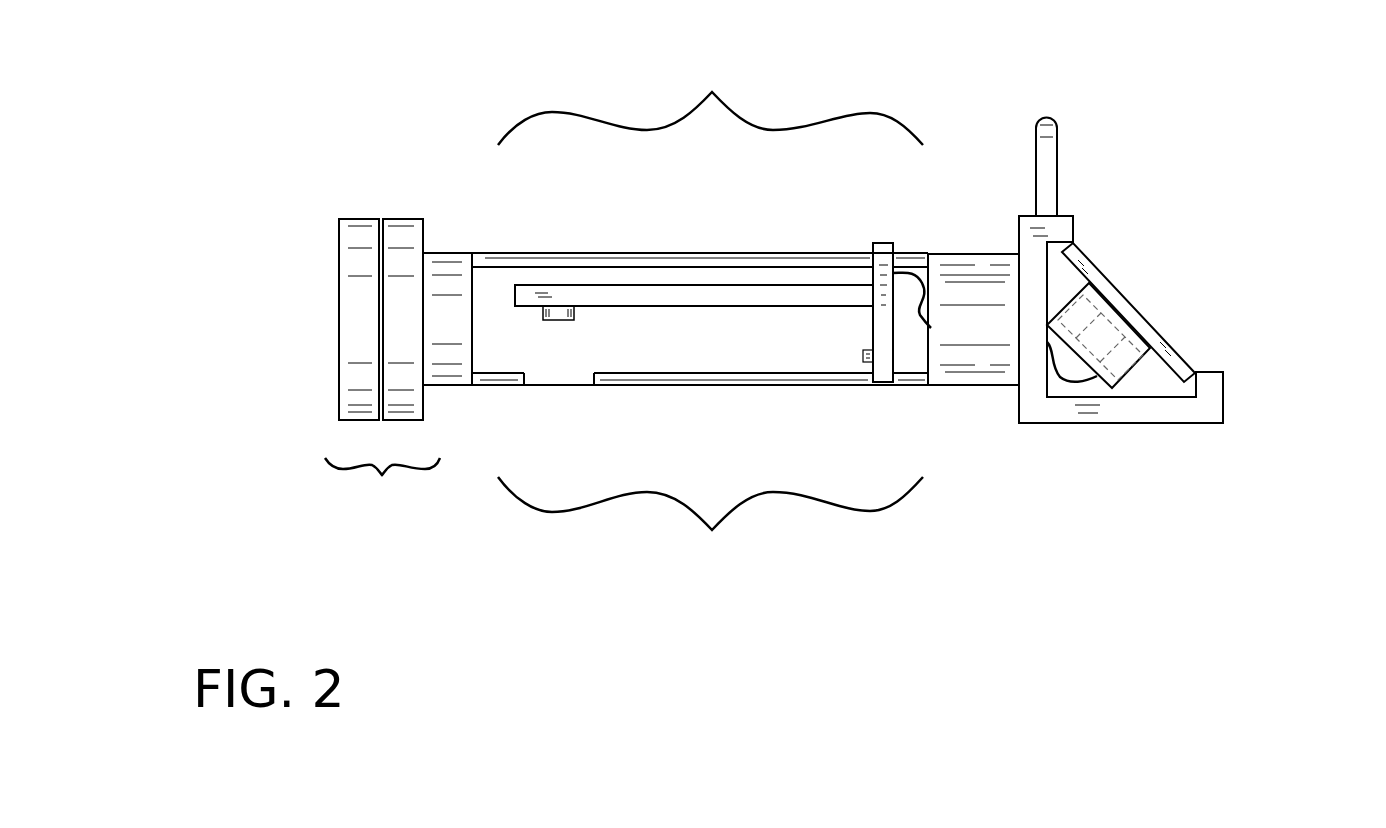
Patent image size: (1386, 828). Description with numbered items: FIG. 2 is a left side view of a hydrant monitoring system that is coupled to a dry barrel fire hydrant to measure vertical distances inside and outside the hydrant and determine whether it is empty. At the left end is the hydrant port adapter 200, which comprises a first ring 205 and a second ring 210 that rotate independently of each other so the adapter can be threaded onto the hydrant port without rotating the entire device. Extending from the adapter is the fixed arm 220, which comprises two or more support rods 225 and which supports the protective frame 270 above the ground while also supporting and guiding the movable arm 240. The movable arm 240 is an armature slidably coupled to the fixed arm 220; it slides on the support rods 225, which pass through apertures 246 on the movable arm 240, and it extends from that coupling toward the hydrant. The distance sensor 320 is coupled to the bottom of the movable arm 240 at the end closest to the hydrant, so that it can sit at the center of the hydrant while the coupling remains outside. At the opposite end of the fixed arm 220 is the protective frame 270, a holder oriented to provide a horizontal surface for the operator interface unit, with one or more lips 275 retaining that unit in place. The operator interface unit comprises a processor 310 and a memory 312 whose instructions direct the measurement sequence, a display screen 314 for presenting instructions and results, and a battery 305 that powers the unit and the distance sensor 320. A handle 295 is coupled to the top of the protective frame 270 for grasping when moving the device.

The hydrant port adapter 200 is at (382, 491).
The first ring 205 is at (357, 218).
The second ring 210 is at (405, 218).
The fixed arm 220 is at (700, 148).
The support rods 225 is at (630, 375).
The movable arm 240 is at (745, 478).
The apertures 246 is at (883, 258).
The protective frame 270 is at (1032, 413).
The lips 275 is at (1068, 232).
The handle 295 is at (1046, 123).
The battery 305 is at (1108, 375).
The processor 310 is at (1070, 335).
The memory 312 is at (1095, 358).
The display screen 314 is at (1133, 313).
The distance sensor 320 is at (558, 320).